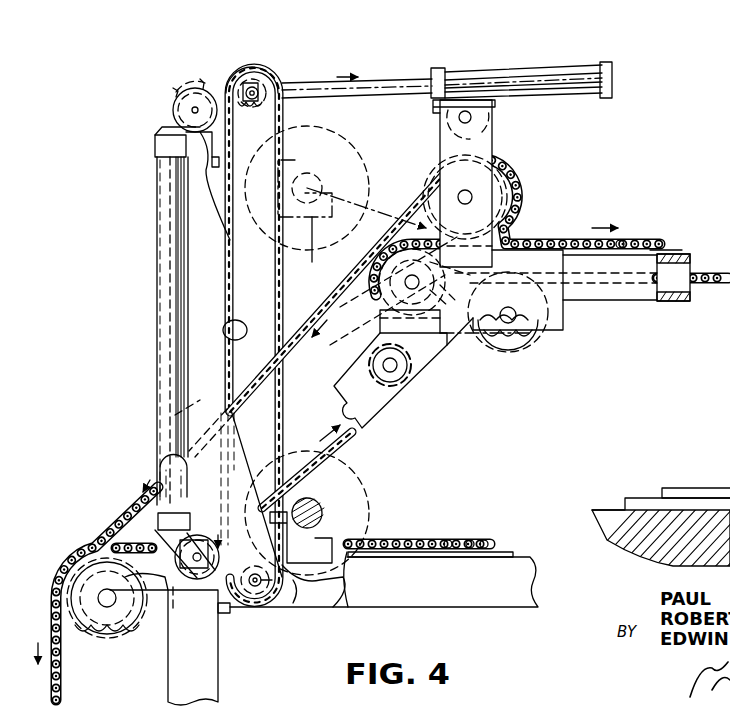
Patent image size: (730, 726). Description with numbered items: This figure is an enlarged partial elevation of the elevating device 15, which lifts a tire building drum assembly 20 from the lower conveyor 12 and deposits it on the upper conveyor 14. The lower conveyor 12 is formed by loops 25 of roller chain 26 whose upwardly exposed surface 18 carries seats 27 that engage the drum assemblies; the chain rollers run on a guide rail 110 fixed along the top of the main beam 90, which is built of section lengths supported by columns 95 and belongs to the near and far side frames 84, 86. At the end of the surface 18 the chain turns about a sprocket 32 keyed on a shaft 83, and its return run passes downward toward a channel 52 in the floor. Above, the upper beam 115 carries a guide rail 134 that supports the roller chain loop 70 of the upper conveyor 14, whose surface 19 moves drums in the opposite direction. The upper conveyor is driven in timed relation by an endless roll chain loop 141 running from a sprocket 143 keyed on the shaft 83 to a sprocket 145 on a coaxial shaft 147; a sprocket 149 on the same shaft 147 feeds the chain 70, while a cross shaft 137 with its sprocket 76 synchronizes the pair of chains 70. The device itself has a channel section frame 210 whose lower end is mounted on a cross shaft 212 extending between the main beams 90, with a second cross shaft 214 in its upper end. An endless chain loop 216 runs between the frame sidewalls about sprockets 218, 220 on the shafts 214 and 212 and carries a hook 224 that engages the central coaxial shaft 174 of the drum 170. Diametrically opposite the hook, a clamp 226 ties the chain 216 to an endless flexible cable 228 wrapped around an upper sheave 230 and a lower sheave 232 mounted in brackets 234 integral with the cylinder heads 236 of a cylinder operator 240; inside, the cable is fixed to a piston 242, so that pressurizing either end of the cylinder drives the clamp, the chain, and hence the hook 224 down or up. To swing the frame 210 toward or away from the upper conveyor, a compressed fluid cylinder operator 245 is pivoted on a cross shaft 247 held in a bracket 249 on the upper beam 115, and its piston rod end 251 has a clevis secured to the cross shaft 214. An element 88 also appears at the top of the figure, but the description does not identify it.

The lower conveyor 12 is at (494, 536).
The upper conveyor 14 is at (662, 238).
The elevating device 15 is at (150, 229).
The upwardly exposed surface 18 is at (431, 537).
The upwardly exposed surface 19 is at (566, 239).
The tire building drum assembly 20 is at (346, 133).
The loop 25 is at (63, 690).
The roller chain 26 is at (451, 537).
The seat 27 is at (644, 239).
The sprocket 32 is at (124, 633).
The channel 52 is at (720, 523).
The roller chain loop 70 is at (618, 285).
The sprocket 76 is at (516, 318).
The shaft 83 is at (114, 600).
The near side frame 84 is at (208, 674).
The far side frame 86 is at (293, 605).
The frame 88 is at (729, 37).
The main beam 90 is at (510, 590).
The column 95 is at (208, 688).
The guide rail 110 is at (507, 548).
The upper beam 115 is at (678, 301).
The guide rail 134 is at (676, 248).
The cross shaft 137 is at (545, 322).
The endless roll chain loop 141 is at (297, 342).
The sprocket 143 is at (187, 594).
The sprocket 145 is at (440, 348).
The coaxial shaft 147 is at (412, 284).
The sprocket 149 is at (440, 368).
The drum 170 is at (338, 457).
The central coaxial shaft 174 is at (367, 166).
The channel section frame 210 is at (200, 291).
The cross shaft 212 is at (312, 600).
The second cross shaft 214 is at (254, 88).
The endless chain loop 216 is at (225, 336).
The sprocket 218 is at (243, 88).
The sprocket 220 is at (258, 586).
The hook 224 is at (328, 533).
The clamp 226 is at (220, 172).
The endless flexible cable 228 is at (175, 415).
The upper sheave 230 is at (178, 98).
The lower sheave 232 is at (160, 530).
The bracket 234 is at (174, 116).
The cylinder head 236 is at (162, 147).
The cylinder operator 240 is at (160, 396).
The piston 242 is at (160, 488).
The compressed fluid cylinder operator 245 is at (527, 77).
The cross shaft 247 is at (471, 117).
The bracket 249 is at (487, 140).
The piston rod end 251 is at (282, 90).